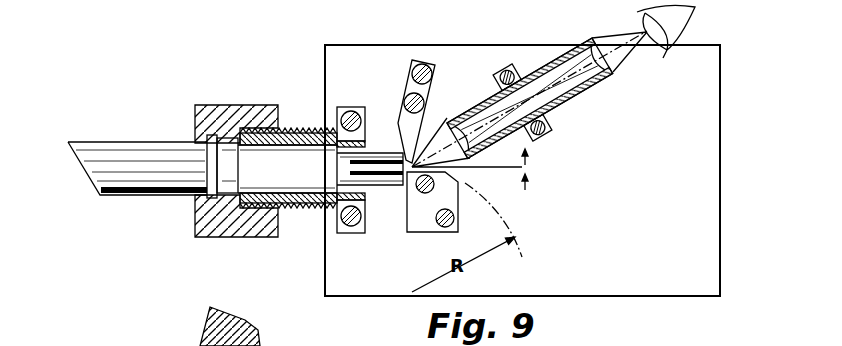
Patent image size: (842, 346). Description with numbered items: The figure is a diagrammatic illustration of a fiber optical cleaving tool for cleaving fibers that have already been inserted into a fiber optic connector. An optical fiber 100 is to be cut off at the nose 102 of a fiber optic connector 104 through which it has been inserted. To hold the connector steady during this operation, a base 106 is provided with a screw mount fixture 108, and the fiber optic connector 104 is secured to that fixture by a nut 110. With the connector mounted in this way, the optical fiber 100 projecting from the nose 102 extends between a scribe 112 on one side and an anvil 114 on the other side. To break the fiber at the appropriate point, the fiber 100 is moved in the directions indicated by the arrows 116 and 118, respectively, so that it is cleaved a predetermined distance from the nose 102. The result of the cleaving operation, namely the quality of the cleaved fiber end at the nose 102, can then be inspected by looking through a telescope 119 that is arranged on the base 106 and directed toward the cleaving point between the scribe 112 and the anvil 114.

The optical fiber 100 is at (480, 169).
The nose 102 is at (383, 187).
The fiber optic connector 104 is at (300, 174).
The base 106 is at (665, 242).
The screw mount fixture 108 is at (288, 211).
The nut 110 is at (229, 104).
The scribe 112 is at (433, 100).
The anvil 114 is at (430, 233).
The arrow 116 is at (529, 160).
The arrow 118 is at (529, 182).
The telescope 119 is at (582, 100).